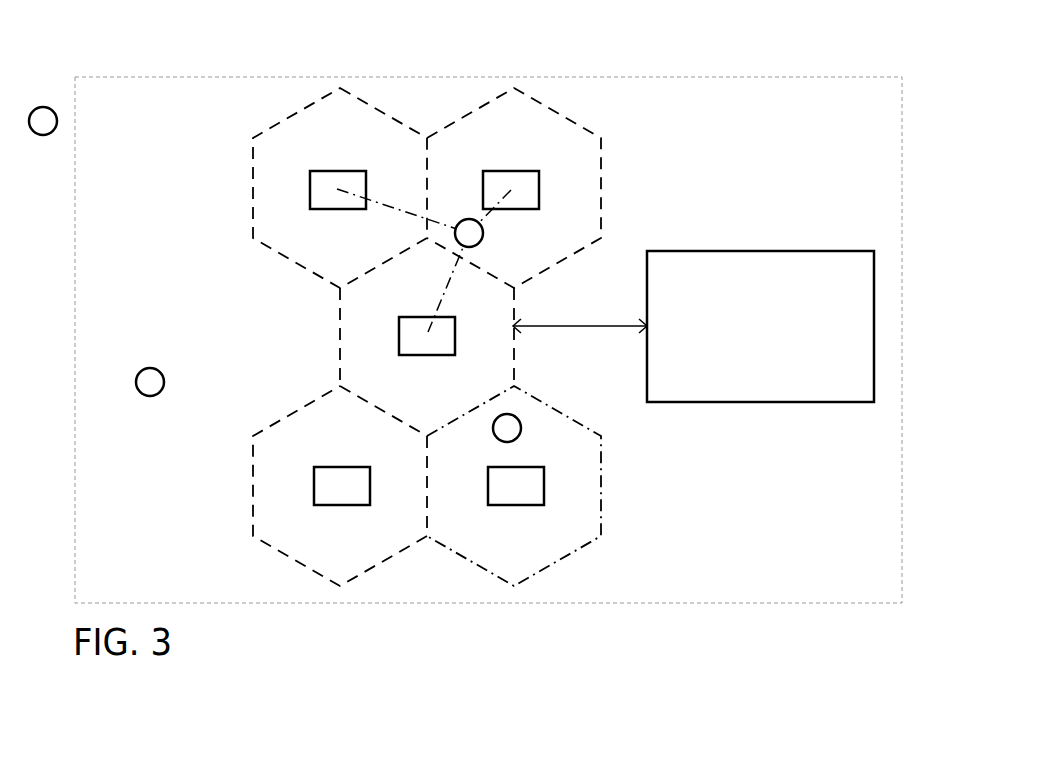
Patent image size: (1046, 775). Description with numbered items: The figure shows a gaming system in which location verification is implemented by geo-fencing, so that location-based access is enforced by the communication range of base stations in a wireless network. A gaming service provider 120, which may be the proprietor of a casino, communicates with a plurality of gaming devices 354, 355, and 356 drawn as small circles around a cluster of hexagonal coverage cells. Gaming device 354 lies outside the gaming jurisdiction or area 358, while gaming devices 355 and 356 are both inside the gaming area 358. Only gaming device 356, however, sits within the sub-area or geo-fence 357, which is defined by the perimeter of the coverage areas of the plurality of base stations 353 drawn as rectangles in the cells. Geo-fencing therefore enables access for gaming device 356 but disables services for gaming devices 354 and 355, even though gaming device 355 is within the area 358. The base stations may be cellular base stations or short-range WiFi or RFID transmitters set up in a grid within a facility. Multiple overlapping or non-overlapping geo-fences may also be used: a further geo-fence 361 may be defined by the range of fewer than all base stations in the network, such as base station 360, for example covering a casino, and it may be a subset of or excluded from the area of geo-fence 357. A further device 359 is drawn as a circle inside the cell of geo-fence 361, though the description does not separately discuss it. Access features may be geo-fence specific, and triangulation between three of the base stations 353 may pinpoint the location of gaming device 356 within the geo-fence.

The gaming service provider 120 is at (761, 251).
The base stations 353 is at (338, 171).
The gaming device 354 is at (57, 113).
The gaming device 355 is at (163, 373).
The gaming device 356 is at (483, 229).
The geo-fence 357 is at (552, 108).
The gaming jurisdiction or area 358 is at (655, 175).
The mobile device 359 is at (507, 430).
The base station 360 is at (545, 484).
The geo-fence 361 is at (602, 498).